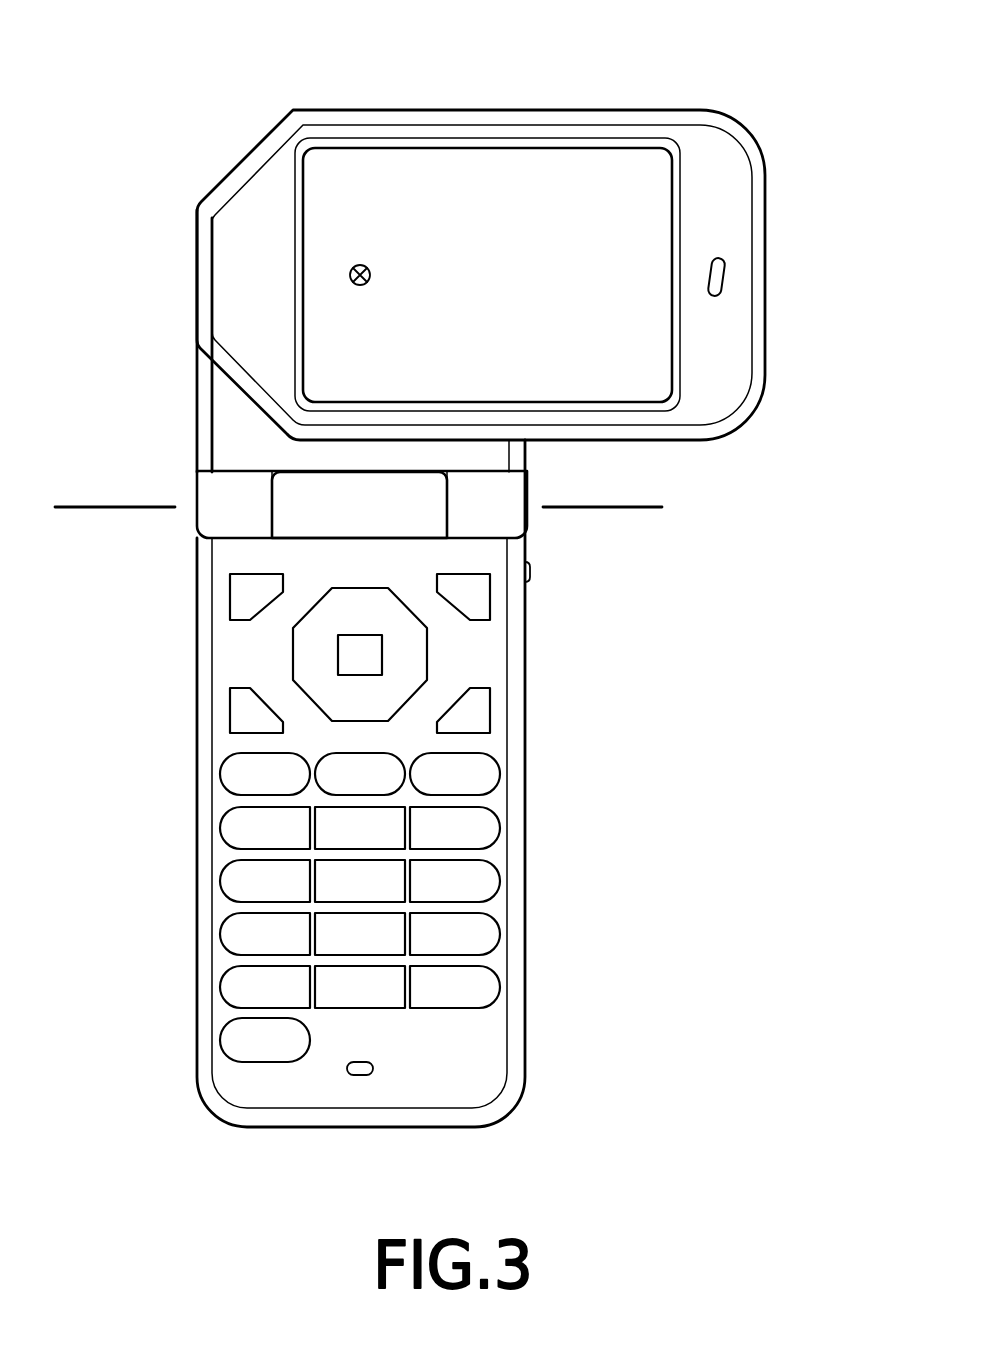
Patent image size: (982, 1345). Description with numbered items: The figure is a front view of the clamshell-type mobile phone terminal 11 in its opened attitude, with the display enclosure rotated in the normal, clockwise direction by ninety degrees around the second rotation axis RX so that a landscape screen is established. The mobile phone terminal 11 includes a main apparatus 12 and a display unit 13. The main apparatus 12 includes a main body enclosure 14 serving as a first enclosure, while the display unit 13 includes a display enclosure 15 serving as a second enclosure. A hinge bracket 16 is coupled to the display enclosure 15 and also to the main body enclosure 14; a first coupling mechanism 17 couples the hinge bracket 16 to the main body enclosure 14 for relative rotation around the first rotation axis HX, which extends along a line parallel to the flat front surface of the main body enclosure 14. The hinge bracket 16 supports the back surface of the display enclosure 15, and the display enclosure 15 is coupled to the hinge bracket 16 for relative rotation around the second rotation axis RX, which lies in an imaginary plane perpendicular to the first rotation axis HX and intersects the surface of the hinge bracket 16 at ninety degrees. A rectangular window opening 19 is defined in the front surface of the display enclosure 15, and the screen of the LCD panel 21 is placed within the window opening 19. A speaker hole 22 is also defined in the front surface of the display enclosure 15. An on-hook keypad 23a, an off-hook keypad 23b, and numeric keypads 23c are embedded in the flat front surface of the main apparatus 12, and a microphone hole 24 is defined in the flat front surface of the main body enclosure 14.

The mobile phone terminal 11 is at (205, 95).
The main apparatus 12 is at (202, 680).
The display unit 13 is at (203, 202).
The main body enclosure 14 is at (527, 983).
The display enclosure 15 is at (723, 115).
The hinge bracket 16 is at (195, 405).
The first coupling mechanism 17 is at (277, 507).
The window opening 19 is at (483, 155).
The LCD panel 21 is at (533, 160).
The speaker hole 22 is at (720, 280).
The on-hook keypad 23a is at (233, 775).
The off-hook keypad 23b is at (483, 772).
The numeric keypads 23c is at (240, 880).
The microphone hole 24 is at (352, 1075).
The second rotation axis RX is at (367, 268).
The first rotation axis HX is at (615, 503).